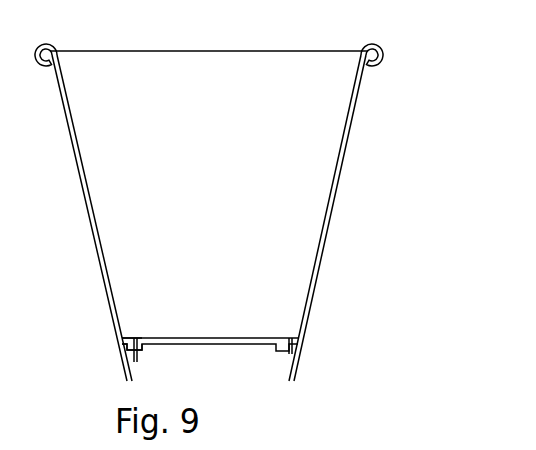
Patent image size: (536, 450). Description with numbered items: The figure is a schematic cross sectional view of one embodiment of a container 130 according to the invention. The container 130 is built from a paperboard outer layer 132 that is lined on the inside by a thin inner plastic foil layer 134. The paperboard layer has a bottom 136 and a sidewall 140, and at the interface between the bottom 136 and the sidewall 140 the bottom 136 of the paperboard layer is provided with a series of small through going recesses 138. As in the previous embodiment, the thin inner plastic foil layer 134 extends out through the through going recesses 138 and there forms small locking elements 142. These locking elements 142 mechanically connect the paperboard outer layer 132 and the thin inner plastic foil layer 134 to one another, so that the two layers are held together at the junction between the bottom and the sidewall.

The container 130 is at (378, 206).
The paperboard outer layer 132 is at (73, 131).
The thin inner plastic foil layer 134 is at (70, 73).
The bottom 136 is at (203, 347).
The through going recesses 138 is at (143, 338).
The sidewall 140 is at (300, 308).
The locking elements 142 is at (137, 362).